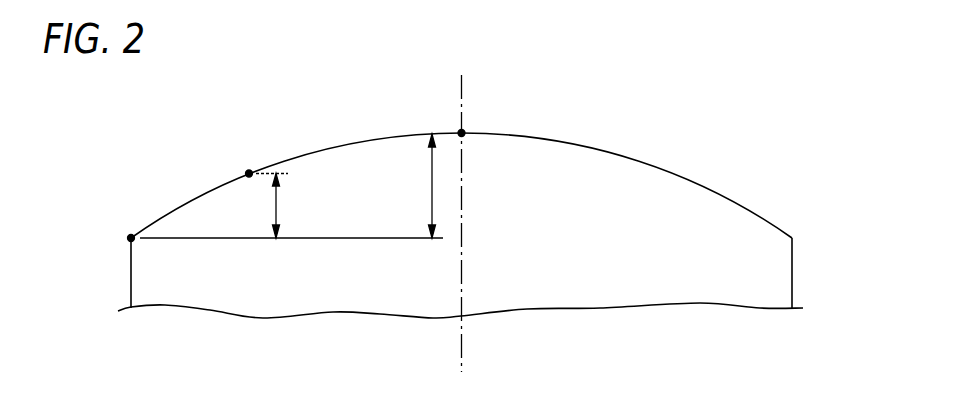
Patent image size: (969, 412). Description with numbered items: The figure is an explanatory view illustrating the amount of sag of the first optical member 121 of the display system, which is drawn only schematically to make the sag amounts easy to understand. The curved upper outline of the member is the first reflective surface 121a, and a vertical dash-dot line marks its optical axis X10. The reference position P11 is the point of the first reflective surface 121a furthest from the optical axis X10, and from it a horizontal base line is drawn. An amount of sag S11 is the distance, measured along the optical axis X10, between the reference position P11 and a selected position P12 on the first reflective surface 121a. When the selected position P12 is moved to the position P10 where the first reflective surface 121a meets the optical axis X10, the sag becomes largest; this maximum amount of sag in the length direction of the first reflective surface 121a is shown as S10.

The first optical member 121 is at (780, 268).
The first reflective surface 121a is at (628, 158).
The optical axis X10 is at (461, 208).
The position on the optical axis P10 is at (484, 116).
The reference position P11 is at (114, 218).
The selected position P12 is at (248, 155).
The maximum amount of sag S10 is at (291, 186).
The amount of sag S11 is at (290, 206).